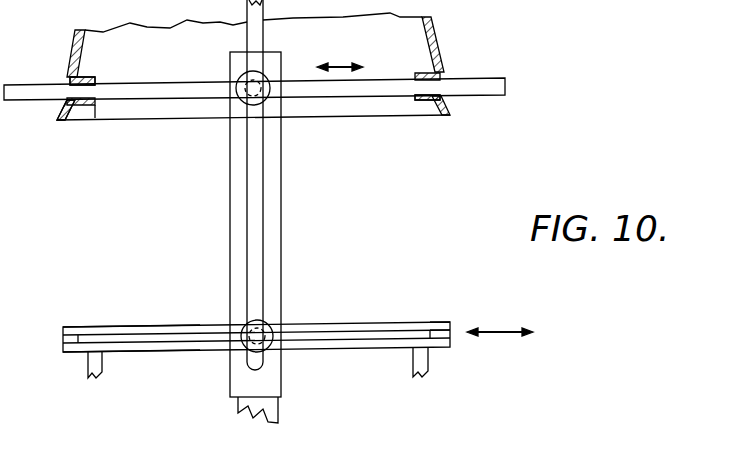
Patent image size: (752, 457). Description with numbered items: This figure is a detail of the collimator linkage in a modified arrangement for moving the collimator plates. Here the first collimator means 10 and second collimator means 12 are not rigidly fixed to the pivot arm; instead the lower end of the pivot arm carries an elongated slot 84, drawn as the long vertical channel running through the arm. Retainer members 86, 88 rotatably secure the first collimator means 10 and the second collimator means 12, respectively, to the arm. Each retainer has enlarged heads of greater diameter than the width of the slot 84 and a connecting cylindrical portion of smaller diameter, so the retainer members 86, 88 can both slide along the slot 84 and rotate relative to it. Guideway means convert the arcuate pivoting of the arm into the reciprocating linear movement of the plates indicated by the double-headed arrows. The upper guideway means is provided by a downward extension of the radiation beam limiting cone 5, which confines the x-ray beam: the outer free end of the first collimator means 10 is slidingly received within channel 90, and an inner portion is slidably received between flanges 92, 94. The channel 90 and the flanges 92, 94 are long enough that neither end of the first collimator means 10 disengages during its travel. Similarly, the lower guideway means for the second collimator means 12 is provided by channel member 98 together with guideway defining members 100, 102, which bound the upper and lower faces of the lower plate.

The radiation beam limiting cone 5 is at (437, 42).
The first collimator means 10 is at (367, 90).
The second collimator means 12 is at (352, 333).
The elongated slot 84 is at (257, 202).
The retainer member 86 is at (252, 105).
The retainer member 88 is at (262, 318).
The channel 90 is at (435, 112).
The flange 92 is at (90, 80).
The flange 94 is at (89, 110).
The channel member 98 is at (443, 332).
The guideway defining member 100 is at (138, 326).
The guideway defining member 102 is at (143, 353).